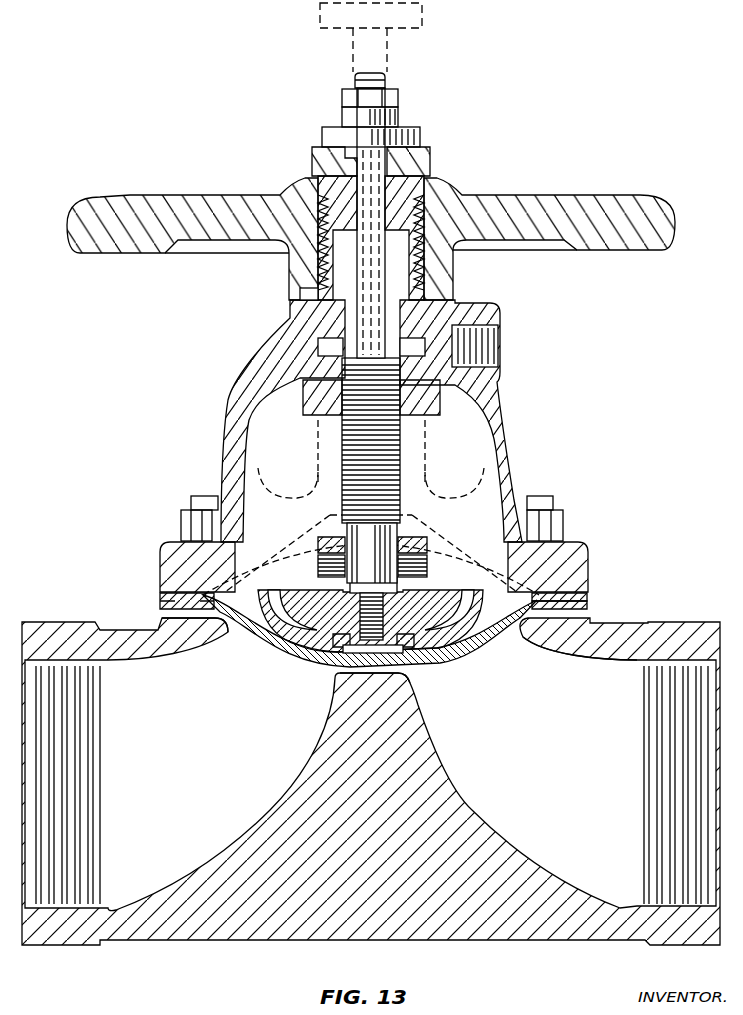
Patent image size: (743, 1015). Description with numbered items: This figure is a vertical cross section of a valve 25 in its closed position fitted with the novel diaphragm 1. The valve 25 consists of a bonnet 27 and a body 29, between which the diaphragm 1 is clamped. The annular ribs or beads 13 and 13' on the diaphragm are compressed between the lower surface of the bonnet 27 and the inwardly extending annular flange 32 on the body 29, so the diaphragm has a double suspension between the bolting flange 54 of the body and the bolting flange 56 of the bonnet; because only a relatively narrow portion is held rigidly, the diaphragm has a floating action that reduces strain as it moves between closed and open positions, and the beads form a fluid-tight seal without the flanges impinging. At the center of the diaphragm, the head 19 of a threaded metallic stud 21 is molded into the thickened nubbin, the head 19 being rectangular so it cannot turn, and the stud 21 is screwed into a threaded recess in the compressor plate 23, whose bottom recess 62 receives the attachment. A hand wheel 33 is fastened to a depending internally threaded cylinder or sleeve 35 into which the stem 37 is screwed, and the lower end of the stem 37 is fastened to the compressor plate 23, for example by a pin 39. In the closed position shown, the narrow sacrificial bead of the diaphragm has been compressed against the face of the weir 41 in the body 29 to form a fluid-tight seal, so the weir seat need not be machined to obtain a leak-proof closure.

The diaphragm 1 is at (252, 644).
The annular rib or bead 13 is at (576, 601).
The annular rib or bead 13' is at (578, 584).
The head of threaded stud 19 is at (371, 555).
The threaded metallic stud 21 is at (385, 611).
The compressor plate 23 is at (275, 590).
The valve 25 is at (520, 447).
The bonnet 27 is at (565, 545).
The body 29 is at (673, 612).
The inwardly extending annular flange 32 is at (531, 636).
The hand wheel 33 is at (547, 197).
The internally threaded cylinder or sleeve 35 is at (416, 273).
The stem 37 is at (392, 451).
The pin 39 is at (418, 553).
The weir 41 is at (395, 675).
The bolting flange of the body 54 is at (165, 625).
The bolting flange of the bonnet 56 is at (178, 589).
The bottom recess in the compressor plate 62 is at (423, 652).